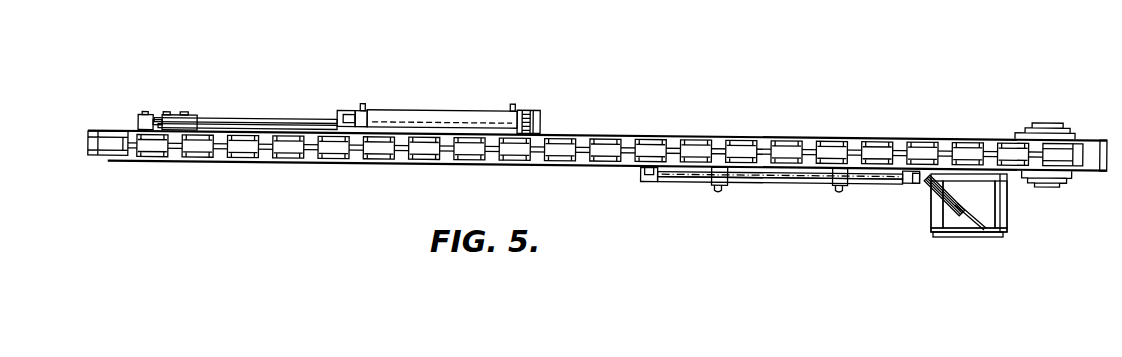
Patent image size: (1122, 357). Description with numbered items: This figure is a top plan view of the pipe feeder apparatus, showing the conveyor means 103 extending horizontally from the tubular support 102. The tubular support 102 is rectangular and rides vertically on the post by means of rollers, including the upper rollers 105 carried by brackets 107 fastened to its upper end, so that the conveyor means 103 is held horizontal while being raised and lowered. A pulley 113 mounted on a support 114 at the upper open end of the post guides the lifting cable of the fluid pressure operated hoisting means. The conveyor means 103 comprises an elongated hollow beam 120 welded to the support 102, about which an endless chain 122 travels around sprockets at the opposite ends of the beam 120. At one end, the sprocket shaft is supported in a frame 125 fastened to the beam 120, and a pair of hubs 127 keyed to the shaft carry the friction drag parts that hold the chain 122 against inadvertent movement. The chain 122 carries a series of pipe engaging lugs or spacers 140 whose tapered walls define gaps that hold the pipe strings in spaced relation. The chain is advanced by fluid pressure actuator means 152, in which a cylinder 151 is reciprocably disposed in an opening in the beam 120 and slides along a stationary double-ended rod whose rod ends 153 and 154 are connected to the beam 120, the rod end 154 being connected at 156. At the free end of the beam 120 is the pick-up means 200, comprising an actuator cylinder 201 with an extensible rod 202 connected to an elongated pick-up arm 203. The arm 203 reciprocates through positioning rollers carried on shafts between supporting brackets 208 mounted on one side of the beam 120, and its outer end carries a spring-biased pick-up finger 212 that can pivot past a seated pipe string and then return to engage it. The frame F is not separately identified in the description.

The conveyor means 103 is at (810, 105).
The elongated hollow beam 120 is at (631, 136).
The endless chain 122 is at (715, 139).
The pipe engaging lugs or spacers 140 is at (879, 141).
The frame 125 is at (1088, 137).
The hubs 127 is at (1042, 123).
The pick-up means 200 is at (265, 110).
The actuator cylinder 201 is at (436, 109).
The rod 202 is at (355, 108).
The pick-up arm 203 is at (229, 114).
The supporting brackets 208 is at (176, 114).
The pick-up finger 212 is at (138, 119).
The cylinder 151 is at (699, 194).
The fluid pressure actuator means 152 is at (800, 172).
The rod end 153 is at (878, 176).
The rod end 154 is at (676, 178).
The connection 156 is at (645, 175).
The tubular support 102 is at (967, 237).
The upper rollers 105 is at (937, 211).
The brackets 107 is at (950, 237).
The pulley 113 is at (945, 216).
The support 114 is at (965, 213).
The frame F is at (1015, 221).